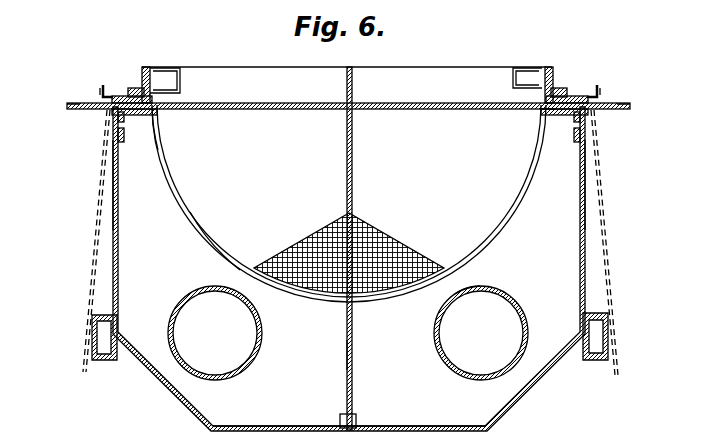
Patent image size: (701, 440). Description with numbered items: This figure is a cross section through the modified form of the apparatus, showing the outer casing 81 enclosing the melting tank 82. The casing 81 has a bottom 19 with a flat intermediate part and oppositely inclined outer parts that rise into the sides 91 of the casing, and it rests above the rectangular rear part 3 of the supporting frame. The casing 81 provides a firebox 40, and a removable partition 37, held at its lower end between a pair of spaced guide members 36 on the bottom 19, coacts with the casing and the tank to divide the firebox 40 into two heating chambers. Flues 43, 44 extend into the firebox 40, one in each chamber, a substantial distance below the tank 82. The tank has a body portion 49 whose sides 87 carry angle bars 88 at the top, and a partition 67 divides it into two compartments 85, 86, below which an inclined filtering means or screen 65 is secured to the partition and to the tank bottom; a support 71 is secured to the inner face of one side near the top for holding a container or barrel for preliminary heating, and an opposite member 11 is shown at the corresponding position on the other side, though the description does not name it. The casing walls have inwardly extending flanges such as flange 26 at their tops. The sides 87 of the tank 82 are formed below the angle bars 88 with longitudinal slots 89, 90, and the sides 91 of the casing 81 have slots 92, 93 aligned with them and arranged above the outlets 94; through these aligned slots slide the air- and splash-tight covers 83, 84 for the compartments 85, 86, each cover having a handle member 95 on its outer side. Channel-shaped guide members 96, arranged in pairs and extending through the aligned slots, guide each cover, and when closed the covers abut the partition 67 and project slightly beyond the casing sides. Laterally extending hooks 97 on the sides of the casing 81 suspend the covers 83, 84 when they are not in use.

The rectangular rear part 3 is at (100, 361).
The right top box member 11 is at (522, 74).
The bottom 19 is at (441, 418).
The flange 26 is at (108, 92).
The guide members 36 is at (357, 414).
The removable partition 37 is at (353, 355).
The firebox 40 is at (390, 320).
The flue 43 is at (188, 302).
The flue 44 is at (518, 290).
The body portion 49 is at (466, 291).
The inclined filtering means or screen 65 is at (313, 237).
The partition 67 is at (352, 165).
The support 71 is at (165, 74).
The outer casing 81 is at (126, 258).
The melting tank 82 is at (222, 235).
The cover 83 is at (264, 110).
The cover 84 is at (448, 110).
The compartment 85 is at (283, 170).
The compartment 86 is at (450, 180).
The sides of tank 87 is at (349, 203).
The angle bars 88 is at (136, 89).
The slot 89 is at (147, 113).
The slot 90 is at (546, 113).
The sides of casing 91 is at (113, 190).
The slot 92 is at (117, 117).
The slot 93 is at (582, 115).
The outlets 94 is at (117, 137).
The handle member 95 is at (70, 106).
The channel-shaped guide members 96 is at (156, 104).
The hooks 97 is at (102, 90).